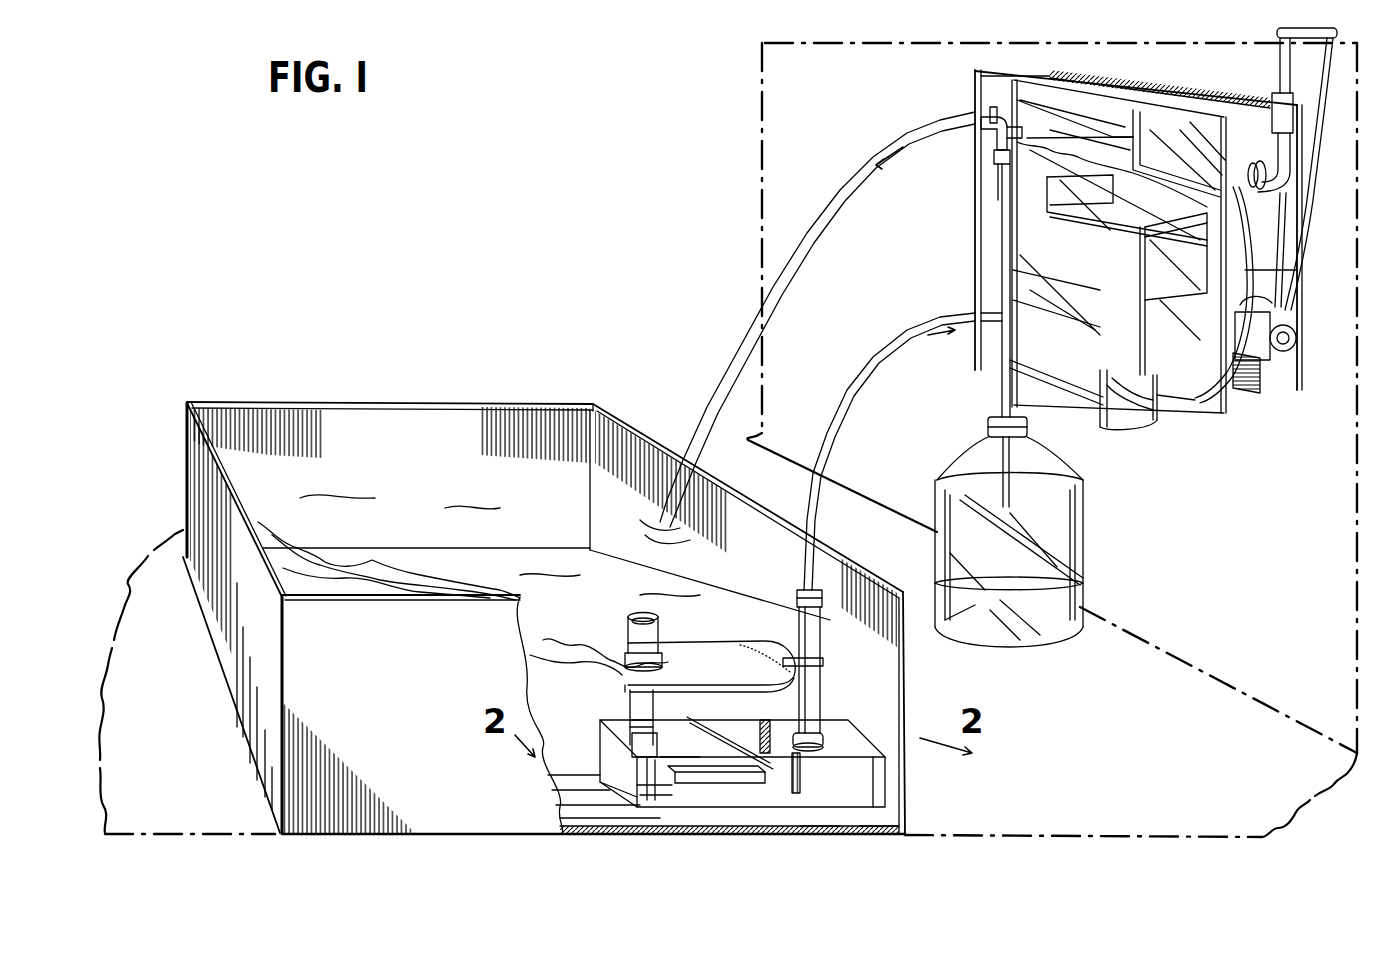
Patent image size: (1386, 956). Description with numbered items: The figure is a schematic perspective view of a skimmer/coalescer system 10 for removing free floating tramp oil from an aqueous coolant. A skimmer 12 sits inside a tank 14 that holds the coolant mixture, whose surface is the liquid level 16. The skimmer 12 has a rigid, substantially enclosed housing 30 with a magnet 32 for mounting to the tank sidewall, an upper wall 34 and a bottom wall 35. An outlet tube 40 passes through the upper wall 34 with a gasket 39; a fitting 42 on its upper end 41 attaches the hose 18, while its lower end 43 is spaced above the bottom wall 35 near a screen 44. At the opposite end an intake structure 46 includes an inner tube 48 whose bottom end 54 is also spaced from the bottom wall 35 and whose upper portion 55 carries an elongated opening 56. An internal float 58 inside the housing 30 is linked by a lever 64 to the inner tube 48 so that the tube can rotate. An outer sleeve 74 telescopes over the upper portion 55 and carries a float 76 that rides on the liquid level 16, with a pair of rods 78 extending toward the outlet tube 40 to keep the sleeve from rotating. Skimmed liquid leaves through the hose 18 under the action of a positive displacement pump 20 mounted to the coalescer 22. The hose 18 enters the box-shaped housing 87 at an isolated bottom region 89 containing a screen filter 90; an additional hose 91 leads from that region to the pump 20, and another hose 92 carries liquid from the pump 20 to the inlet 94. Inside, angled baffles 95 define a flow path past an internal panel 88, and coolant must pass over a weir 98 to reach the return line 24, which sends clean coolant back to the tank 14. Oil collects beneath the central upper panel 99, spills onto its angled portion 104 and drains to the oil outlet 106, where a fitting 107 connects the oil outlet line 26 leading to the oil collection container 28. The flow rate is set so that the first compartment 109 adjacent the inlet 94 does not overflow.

The skimmer/coalescer system 10 is at (566, 90).
The skimmer 12 is at (797, 814).
The tank 14 is at (395, 402).
The liquid level 16 is at (420, 462).
The hose 18 is at (852, 378).
The positive displacement pump 20 is at (1260, 363).
The coalescer 22 is at (1227, 456).
The return line 24 is at (805, 217).
The oil outlet line 26 is at (1000, 252).
The oil collection container 28 is at (1085, 552).
The housing 30 is at (655, 798).
The magnet 32 is at (885, 793).
The upper wall 34 is at (720, 724).
The bottom wall 35 is at (750, 800).
The gasket 39 is at (822, 738).
The outlet tube 40 is at (822, 690).
The upper end 41 is at (797, 600).
The fitting 42 is at (802, 593).
The lower end 43 is at (875, 830).
The screen 44 is at (822, 830).
The intake structure 46 is at (610, 707).
The inner tube 48 is at (637, 733).
The bottom end 54 is at (627, 787).
The upper portion 55 is at (683, 638).
The elongated opening 56 is at (623, 612).
The internal float 58 is at (697, 790).
The lever 64 is at (690, 760).
The outer sleeve 74 is at (623, 710).
The float 76 is at (716, 674).
The rods 78 is at (818, 662).
The housing 87 is at (965, 214).
The internal panel 88 is at (1000, 190).
The bottom region 89 is at (975, 368).
The screen filter 90 is at (1058, 393).
The additional hose 91 is at (1267, 270).
The hose 92 is at (1303, 222).
The inlet 94 is at (1295, 148).
The angled baffles 95 is at (1160, 175).
The weir 98 is at (990, 110).
The central upper panel 99 is at (1125, 130).
The angled portion 104 is at (1090, 127).
The oil outlet 106 is at (1022, 128).
The fitting 107 is at (995, 160).
The first compartment 109 is at (1200, 120).